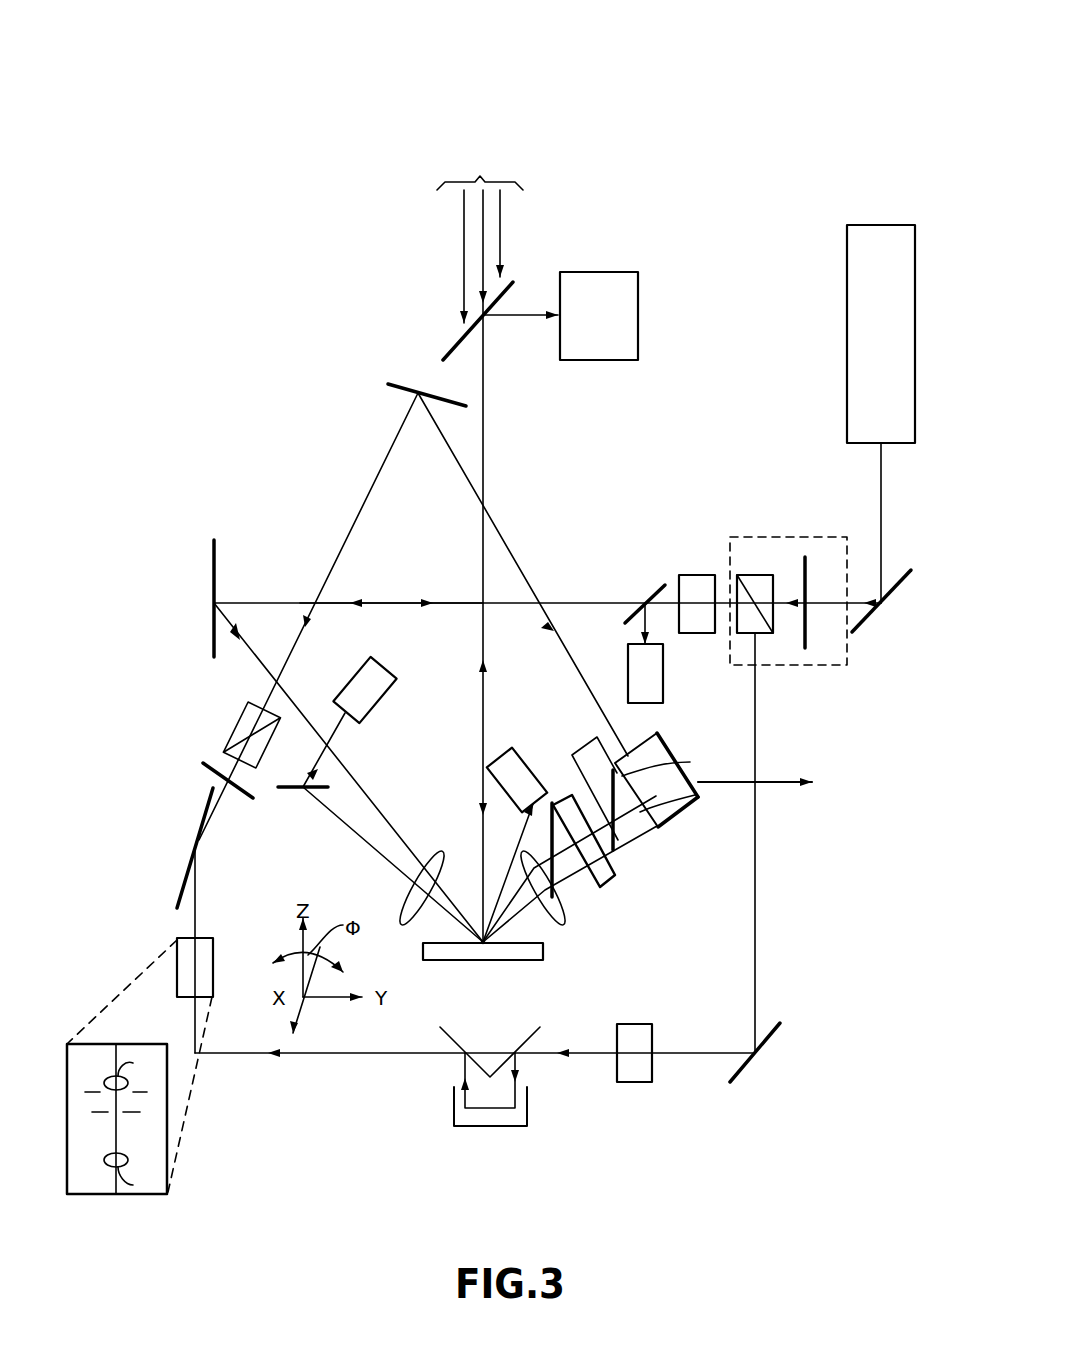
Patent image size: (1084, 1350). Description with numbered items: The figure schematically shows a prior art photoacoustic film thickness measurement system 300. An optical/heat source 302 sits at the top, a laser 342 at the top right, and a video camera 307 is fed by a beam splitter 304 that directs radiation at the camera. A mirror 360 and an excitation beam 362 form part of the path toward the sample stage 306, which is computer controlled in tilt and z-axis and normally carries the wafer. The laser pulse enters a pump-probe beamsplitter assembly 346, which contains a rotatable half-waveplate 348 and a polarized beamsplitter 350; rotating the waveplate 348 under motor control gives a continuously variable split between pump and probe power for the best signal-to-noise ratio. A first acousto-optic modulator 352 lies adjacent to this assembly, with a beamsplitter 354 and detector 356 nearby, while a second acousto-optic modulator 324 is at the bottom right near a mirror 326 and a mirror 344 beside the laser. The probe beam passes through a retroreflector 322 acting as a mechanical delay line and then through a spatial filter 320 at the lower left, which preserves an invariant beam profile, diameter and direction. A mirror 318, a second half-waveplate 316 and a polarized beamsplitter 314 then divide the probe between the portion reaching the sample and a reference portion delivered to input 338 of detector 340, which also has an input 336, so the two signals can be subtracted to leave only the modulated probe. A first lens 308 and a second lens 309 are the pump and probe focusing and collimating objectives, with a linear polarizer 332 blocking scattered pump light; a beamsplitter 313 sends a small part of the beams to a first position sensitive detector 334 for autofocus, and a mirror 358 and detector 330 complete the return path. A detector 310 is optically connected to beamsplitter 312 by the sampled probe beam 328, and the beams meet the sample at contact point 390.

The photoacoustic system 300 is at (609, 43).
The optical/heat source 302 is at (480, 176).
The beam splitter 304 is at (444, 355).
The sample stage 306 is at (545, 960).
The video camera 307 is at (580, 272).
The first lens 308 is at (436, 855).
The second lens 309 is at (565, 925).
The detector 310 is at (350, 678).
The beamsplitter 312 is at (290, 789).
The beamsplitter 313 is at (616, 830).
The polarized beamsplitter 314 is at (248, 703).
The wave plate 316 is at (214, 765).
The mirror 318 is at (205, 793).
The spatial filter 320 is at (180, 938).
The retroreflector 322 is at (492, 1127).
The second acousto-optic modulator 324 is at (633, 1082).
The mirror 326 is at (748, 1065).
The sampled probe beam 328 is at (758, 870).
The detector 330 is at (488, 764).
The linear polarizer 332 is at (606, 885).
The first position sensitive detector 334 is at (578, 755).
The input 336 is at (640, 812).
The input 338 is at (622, 776).
The detector 340 is at (700, 768).
The laser 342 is at (870, 225).
The mirror 344 is at (878, 598).
The pump-probe beamsplitter assembly 346 is at (780, 537).
The waveplate 348 is at (805, 648).
The polarized beamsplitter 350 is at (748, 575).
The first acousto-optic modulator 352 is at (698, 575).
The beamsplitter 354 is at (662, 583).
The detector 356 is at (628, 665).
The mirror 358 is at (402, 386).
The mirror 360 is at (212, 570).
The excitation beam 362 is at (475, 603).
The contact point 390 is at (492, 942).